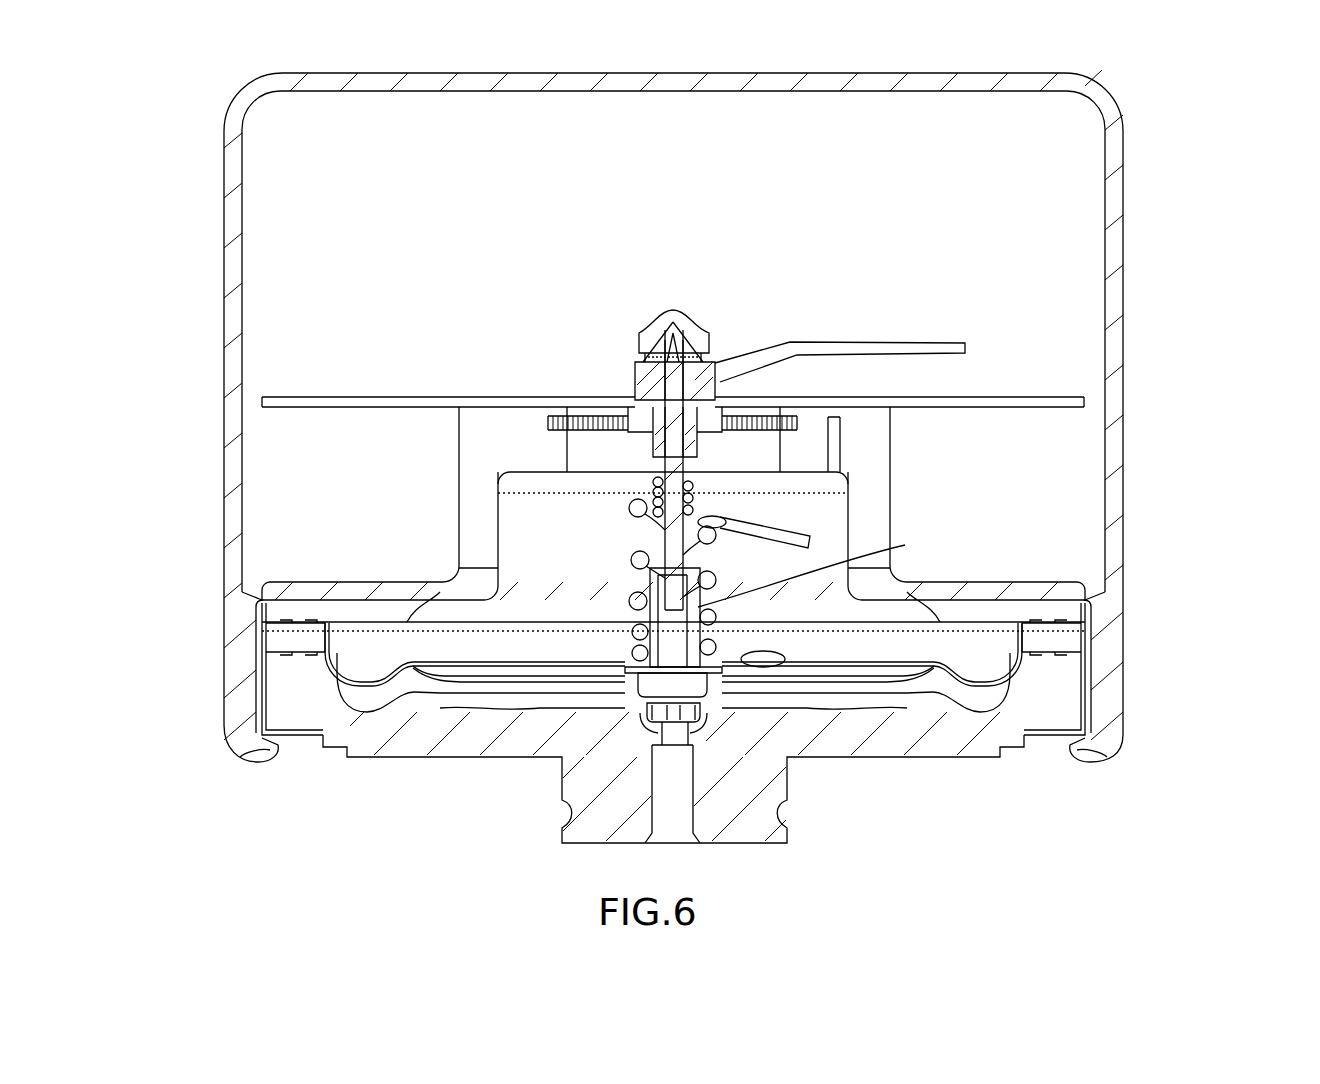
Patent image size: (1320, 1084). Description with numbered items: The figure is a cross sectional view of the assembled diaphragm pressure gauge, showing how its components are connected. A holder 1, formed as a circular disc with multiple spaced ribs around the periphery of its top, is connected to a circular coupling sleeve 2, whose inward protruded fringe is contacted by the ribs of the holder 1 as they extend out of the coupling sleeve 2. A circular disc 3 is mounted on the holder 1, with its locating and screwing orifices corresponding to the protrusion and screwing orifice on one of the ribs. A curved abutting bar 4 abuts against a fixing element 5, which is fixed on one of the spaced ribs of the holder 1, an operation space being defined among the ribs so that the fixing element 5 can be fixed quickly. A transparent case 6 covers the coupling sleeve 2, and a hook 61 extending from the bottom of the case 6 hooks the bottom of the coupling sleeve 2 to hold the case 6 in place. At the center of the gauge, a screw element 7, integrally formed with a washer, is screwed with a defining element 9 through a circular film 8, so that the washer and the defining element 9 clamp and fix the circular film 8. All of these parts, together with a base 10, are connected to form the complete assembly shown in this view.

The holder 1 is at (1035, 605).
The coupling sleeve 2 is at (250, 660).
The disc 3 is at (440, 395).
The curved abutting bar 4 is at (675, 310).
The fixing element 5 is at (616, 443).
The case 6 is at (1125, 430).
The screw element 7 is at (640, 700).
The circular film 8 is at (385, 660).
The defining element 9 is at (720, 583).
The base 10 is at (455, 760).
The hook 61 is at (288, 768).